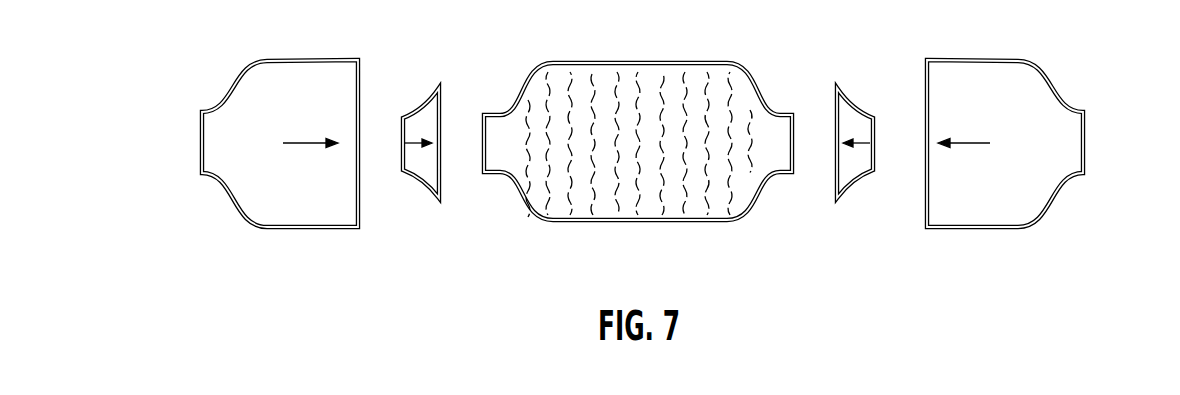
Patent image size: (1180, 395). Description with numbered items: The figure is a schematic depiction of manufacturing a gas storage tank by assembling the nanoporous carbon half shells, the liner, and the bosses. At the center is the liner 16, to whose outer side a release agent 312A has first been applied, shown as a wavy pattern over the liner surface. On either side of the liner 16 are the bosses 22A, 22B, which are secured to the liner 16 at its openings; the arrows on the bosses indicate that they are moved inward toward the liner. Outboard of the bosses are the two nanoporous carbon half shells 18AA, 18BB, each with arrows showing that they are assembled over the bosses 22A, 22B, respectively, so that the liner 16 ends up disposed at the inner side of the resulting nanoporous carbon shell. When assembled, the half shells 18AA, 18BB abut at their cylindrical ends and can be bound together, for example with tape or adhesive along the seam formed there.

The nanoporous carbon half shell 18AA is at (244, 201).
The boss 22A is at (418, 179).
The liner 16 is at (536, 209).
The release agent 312A is at (686, 88).
The boss 22B is at (858, 178).
The nanoporous carbon half shell 18BB is at (1041, 201).